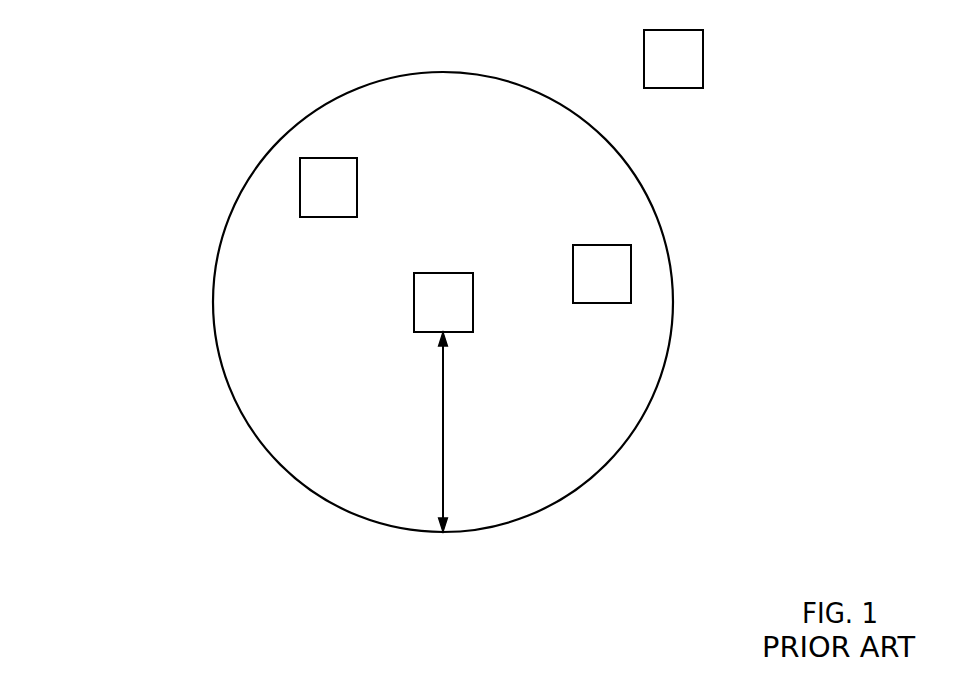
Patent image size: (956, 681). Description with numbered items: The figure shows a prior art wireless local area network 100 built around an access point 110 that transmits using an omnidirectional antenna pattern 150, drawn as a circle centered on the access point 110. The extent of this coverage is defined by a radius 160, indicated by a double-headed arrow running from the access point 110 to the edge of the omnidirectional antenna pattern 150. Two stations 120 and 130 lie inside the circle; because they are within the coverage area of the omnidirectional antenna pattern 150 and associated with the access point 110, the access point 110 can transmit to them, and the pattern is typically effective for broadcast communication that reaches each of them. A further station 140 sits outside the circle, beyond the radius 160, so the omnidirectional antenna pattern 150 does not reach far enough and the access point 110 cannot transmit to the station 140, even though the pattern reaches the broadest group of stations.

The wireless local area network 100 is at (79, 75).
The access point 110 is at (443, 302).
The station 120 is at (328, 187).
The station 130 is at (602, 274).
The station 140 is at (673, 59).
The omnidirectional antenna pattern 150 is at (228, 224).
The radius 160 is at (443, 425).